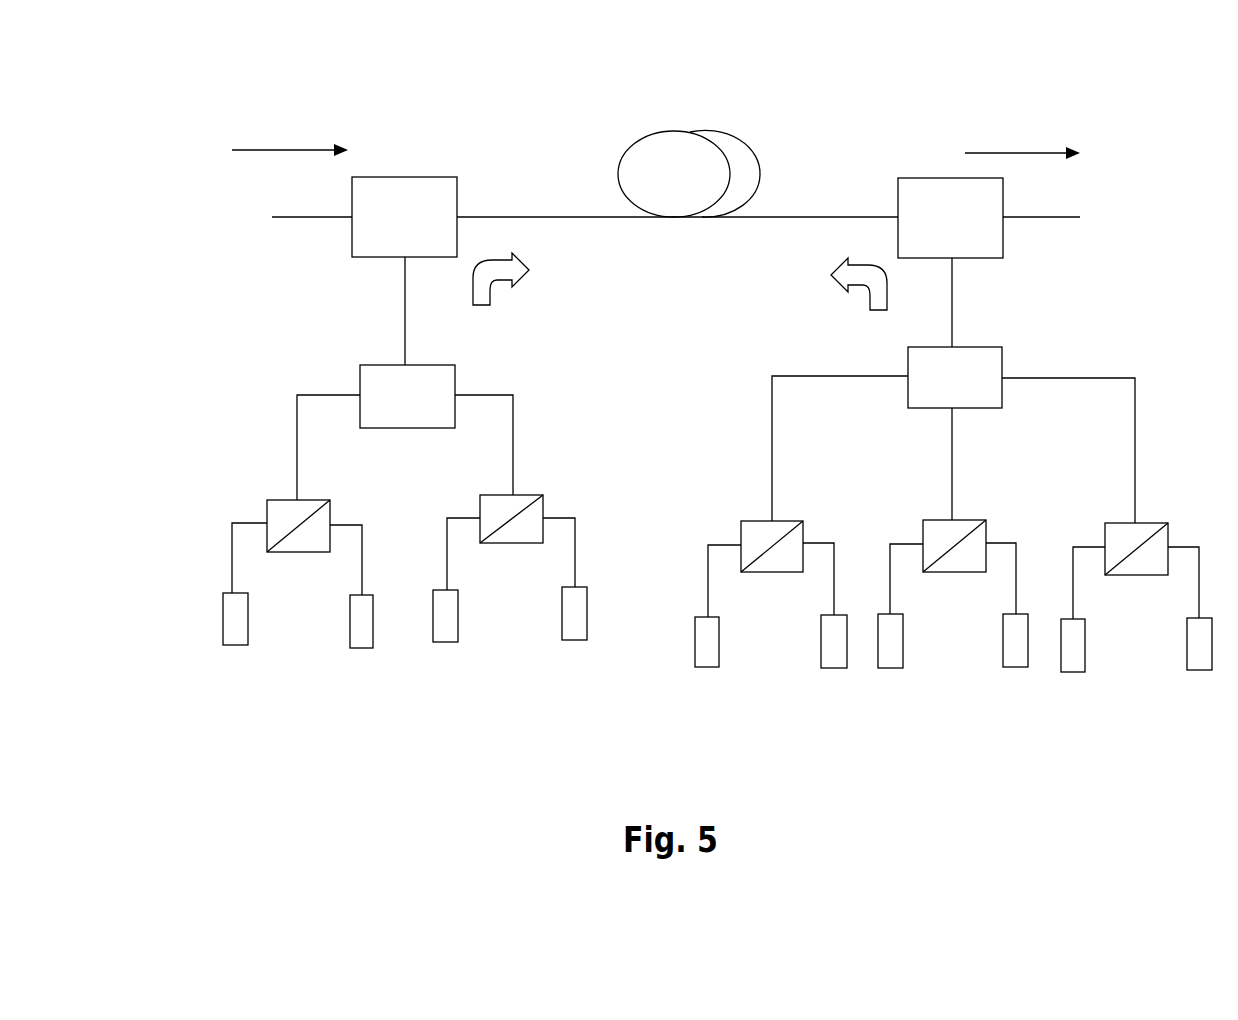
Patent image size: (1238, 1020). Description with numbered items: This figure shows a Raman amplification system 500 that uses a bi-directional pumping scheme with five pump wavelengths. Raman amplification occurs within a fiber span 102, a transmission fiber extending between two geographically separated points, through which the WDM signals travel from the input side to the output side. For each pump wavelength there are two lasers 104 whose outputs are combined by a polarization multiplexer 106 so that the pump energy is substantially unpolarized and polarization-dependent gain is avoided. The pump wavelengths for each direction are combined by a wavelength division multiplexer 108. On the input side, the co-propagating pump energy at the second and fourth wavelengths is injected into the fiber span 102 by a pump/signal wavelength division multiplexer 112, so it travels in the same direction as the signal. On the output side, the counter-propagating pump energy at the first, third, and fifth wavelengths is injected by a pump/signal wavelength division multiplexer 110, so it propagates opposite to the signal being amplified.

The Raman amplification system 500 is at (265, 44).
The fiber span 102 is at (620, 165).
The laser 104 is at (226, 628).
The polarization multiplexer 106 is at (270, 508).
The wavelength division multiplexer 108 is at (362, 378).
The pump/signal wavelength division multiplexer 110 is at (900, 192).
The pump/signal wavelength division multiplexer 112 is at (355, 200).